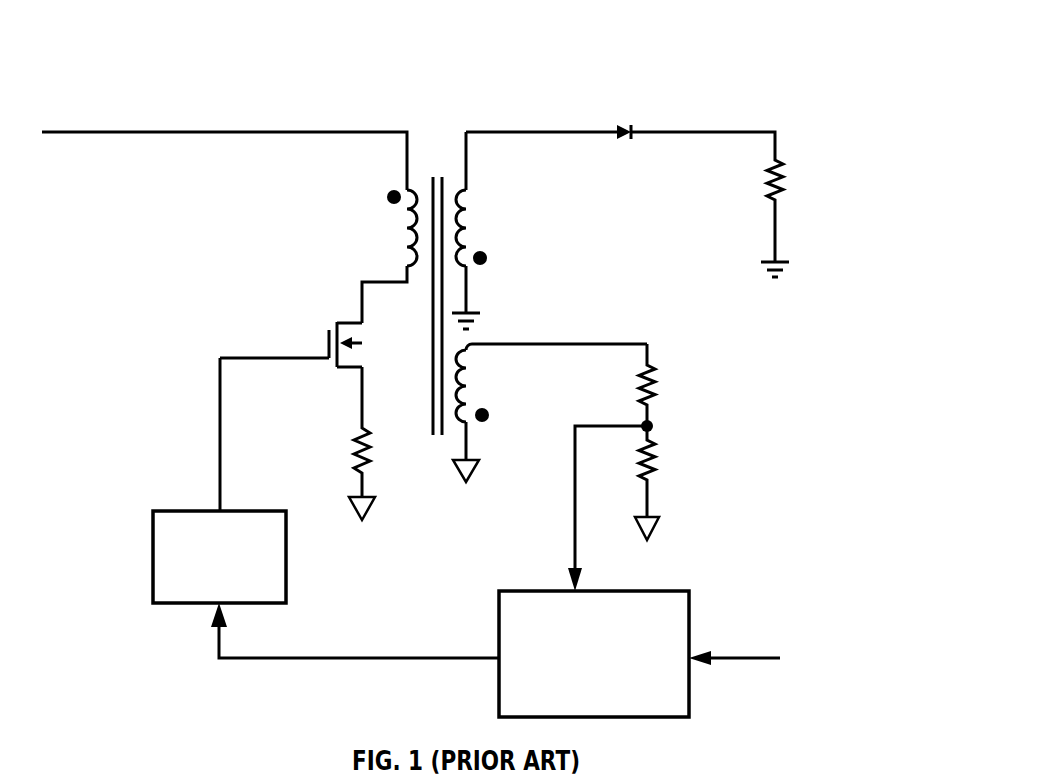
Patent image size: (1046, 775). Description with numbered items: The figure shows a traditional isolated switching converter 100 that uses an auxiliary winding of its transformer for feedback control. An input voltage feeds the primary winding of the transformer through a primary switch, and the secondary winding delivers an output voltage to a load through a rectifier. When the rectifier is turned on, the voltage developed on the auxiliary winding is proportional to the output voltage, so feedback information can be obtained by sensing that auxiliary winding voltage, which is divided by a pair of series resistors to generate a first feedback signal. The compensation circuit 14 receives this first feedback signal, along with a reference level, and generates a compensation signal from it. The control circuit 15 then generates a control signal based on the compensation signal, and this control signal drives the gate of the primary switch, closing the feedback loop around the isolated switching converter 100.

The isolated switching converter 100 is at (745, 50).
The compensation circuit 14 is at (499, 625).
The control circuit 15 is at (286, 562).